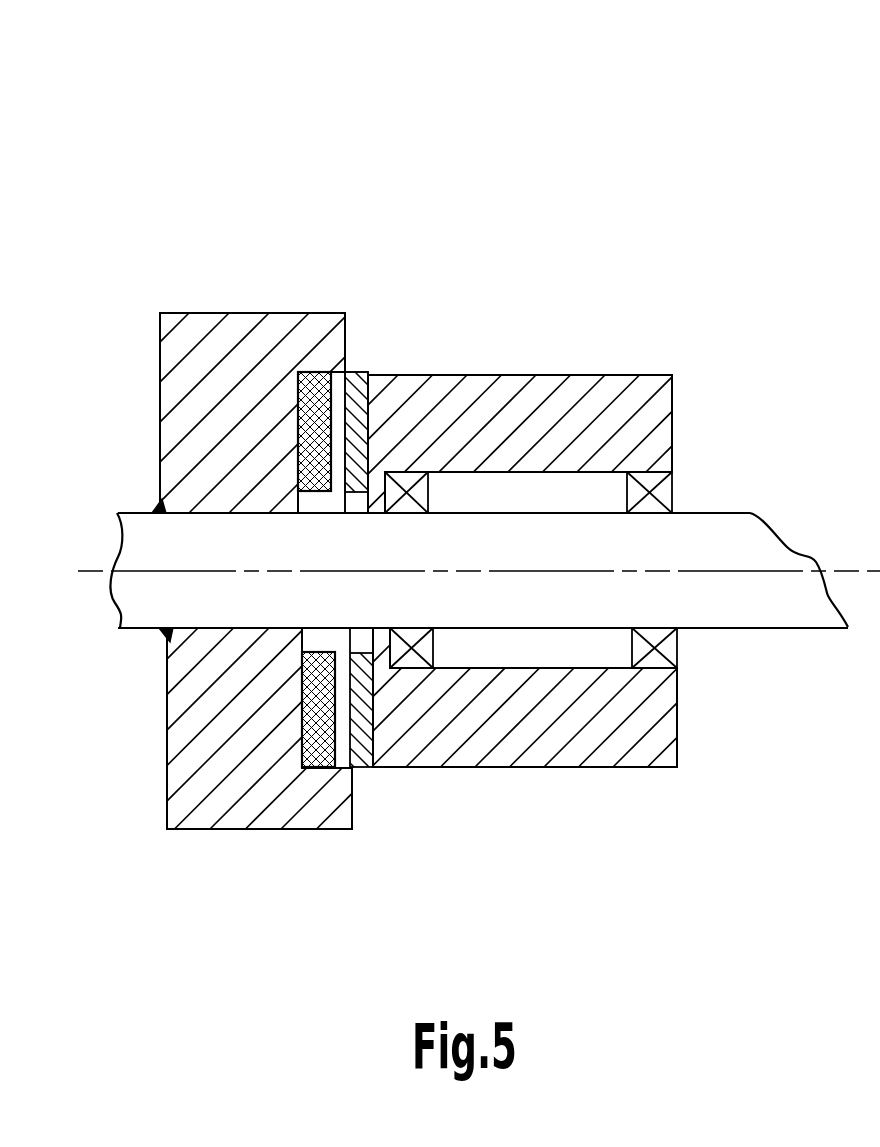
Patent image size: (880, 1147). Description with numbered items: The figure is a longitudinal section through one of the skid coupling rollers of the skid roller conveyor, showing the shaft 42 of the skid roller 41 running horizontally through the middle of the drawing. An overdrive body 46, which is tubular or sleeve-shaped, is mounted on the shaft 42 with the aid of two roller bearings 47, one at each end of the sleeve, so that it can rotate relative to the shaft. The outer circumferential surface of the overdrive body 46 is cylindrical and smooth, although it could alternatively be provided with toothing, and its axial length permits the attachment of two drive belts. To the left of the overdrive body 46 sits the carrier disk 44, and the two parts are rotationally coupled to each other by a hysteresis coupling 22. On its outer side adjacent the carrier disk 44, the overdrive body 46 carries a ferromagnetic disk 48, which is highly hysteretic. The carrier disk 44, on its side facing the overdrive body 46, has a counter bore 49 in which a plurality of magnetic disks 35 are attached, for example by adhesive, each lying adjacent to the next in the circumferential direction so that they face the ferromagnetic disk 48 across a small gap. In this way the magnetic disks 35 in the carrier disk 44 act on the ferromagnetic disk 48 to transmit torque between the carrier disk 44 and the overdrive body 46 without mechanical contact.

The skid roller 41 is at (700, 176).
The shaft 42 is at (703, 547).
The carrier disk 44 is at (232, 291).
The hysteresis coupling 22 is at (373, 297).
The ferromagnetic disk 48 is at (370, 373).
The overdrive body 46 is at (663, 372).
The roller bearings 47 is at (422, 647).
The magnetic disks 35 is at (297, 425).
The counter bore 49 is at (300, 644).